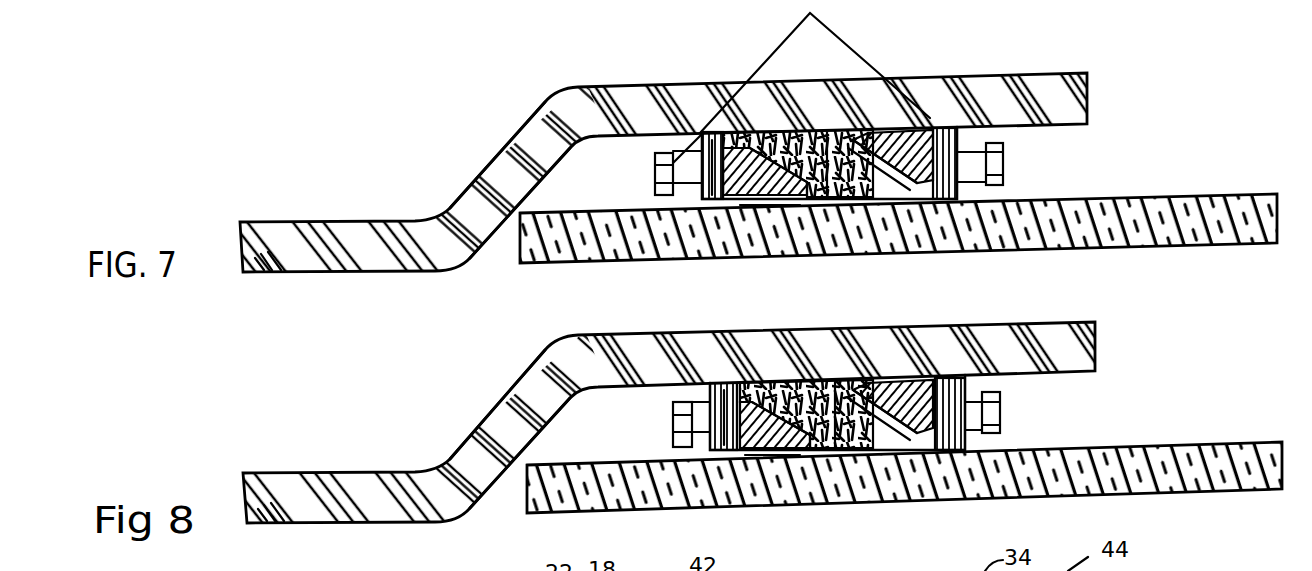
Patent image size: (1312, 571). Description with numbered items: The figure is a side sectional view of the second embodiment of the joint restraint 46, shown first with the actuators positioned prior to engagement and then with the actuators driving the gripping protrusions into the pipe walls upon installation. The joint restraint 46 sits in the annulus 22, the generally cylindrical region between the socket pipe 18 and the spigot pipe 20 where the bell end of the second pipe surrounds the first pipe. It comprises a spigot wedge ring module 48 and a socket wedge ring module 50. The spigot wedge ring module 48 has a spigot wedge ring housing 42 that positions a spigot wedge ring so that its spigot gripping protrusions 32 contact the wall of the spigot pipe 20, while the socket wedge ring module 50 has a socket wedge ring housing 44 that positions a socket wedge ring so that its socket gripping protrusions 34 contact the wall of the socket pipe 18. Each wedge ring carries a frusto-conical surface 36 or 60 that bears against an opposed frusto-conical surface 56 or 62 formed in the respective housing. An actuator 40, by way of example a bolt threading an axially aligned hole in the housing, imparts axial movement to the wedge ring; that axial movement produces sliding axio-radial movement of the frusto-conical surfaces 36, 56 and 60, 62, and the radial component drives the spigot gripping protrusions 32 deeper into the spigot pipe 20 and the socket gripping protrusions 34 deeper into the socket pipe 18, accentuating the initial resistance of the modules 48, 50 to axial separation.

In FIG. 7, the socket pipe 18 is at (652, 108).
In FIG. 8, the socket pipe 18 is at (591, 360).
In FIG. 7, the spigot pipe 20 is at (613, 255).
In FIG. 8, the spigot pipe 20 is at (573, 503).
In FIG. 7, the annulus 22 is at (590, 173).
In FIG. 8, the annulus 22 is at (572, 432).
In FIG. 7, the spigot gripping protrusions 32 is at (773, 193).
In FIG. 8, the spigot gripping protrusions 32 is at (783, 450).
In FIG. 7, the socket gripping protrusions 34 is at (913, 125).
In FIG. 8, the socket gripping protrusions 34 is at (993, 328).
In FIG. 7, the frusto-conical surface 36 is at (790, 200).
In FIG. 8, the frusto-conical surface 36 is at (793, 455).
In FIG. 8, the actuator 40 is at (673, 430).
In FIG. 7, the spigot wedge ring housing 42 is at (778, 133).
In FIG. 8, the spigot wedge ring housing 42 is at (793, 383).
In FIG. 7, the socket wedge ring housing 44 is at (965, 118).
In FIG. 8, the socket wedge ring housing 44 is at (1000, 348).
In FIG. 7, the joint restraint 46 is at (1137, 153).
In FIG. 8, the joint restraint 46 is at (1137, 400).
In FIG. 7, the spigot wedge ring module 48 is at (649, 198).
In FIG. 8, the spigot wedge ring module 48 is at (640, 403).
In FIG. 7, the socket wedge ring module 50 is at (1017, 187).
In FIG. 8, the socket wedge ring module 50 is at (1021, 394).
In FIG. 7, the frusto-conical surface 56 is at (820, 205).
In FIG. 8, the frusto-conical surface 56 is at (827, 467).
In FIG. 7, the frusto-conical surface 60 is at (893, 130).
In FIG. 8, the frusto-conical surface 60 is at (873, 378).
In FIG. 7, the frusto-conical surface 62 is at (862, 130).
In FIG. 8, the frusto-conical surface 62 is at (860, 392).